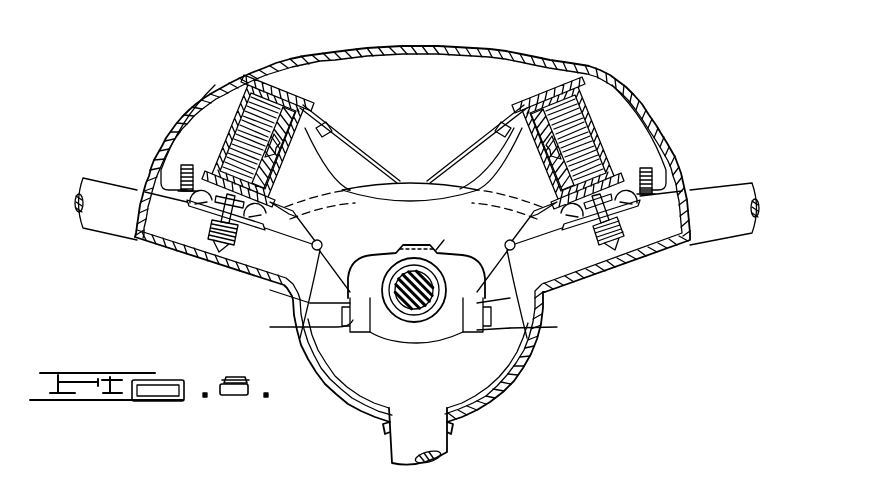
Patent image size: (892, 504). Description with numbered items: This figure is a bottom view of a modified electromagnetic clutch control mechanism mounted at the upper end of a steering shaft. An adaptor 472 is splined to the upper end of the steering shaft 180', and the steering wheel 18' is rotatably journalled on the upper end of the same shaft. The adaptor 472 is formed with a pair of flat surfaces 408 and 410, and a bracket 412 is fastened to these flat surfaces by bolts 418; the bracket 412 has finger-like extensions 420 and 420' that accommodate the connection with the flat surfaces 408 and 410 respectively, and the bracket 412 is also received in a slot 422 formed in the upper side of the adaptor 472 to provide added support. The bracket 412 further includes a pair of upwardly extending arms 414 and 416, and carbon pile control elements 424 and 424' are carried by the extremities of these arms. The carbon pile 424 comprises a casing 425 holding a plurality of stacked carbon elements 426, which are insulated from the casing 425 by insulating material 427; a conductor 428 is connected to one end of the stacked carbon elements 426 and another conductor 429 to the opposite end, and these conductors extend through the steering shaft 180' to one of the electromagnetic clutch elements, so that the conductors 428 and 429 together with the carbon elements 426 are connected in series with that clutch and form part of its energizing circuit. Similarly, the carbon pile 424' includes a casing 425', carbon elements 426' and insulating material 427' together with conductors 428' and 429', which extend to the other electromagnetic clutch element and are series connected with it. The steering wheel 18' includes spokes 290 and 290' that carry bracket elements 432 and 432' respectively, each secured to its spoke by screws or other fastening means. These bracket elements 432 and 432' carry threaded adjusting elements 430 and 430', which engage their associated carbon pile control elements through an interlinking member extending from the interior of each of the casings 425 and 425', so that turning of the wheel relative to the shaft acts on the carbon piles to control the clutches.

The steering wheel 18' is at (412, 255).
The spoke 290 is at (117, 221).
The spoke 290' is at (705, 199).
The carbon pile 424 is at (258, 118).
The carbon pile 424' is at (568, 120).
The casing 425 is at (214, 129).
The casing 425' is at (605, 122).
The stacked carbon elements 426 is at (209, 147).
The carbon elements 426' is at (609, 142).
The insulating material 427 is at (280, 150).
The insulating material 427' is at (618, 170).
The conductor 428 is at (350, 137).
The conductor 428' is at (477, 143).
The conductor 429 is at (365, 159).
The conductor 429' is at (502, 159).
The threaded adjusting element 430 is at (187, 223).
The threaded adjusting element 430' is at (628, 236).
The bracket element 432 is at (235, 227).
The bracket element 432' is at (628, 235).
The finger-like extension 420 is at (521, 277).
The finger-like extension 420' is at (286, 277).
The arm 414 is at (330, 167).
The arm 416 is at (512, 162).
The flat surface 408 is at (512, 300).
The flat surface 410 is at (372, 336).
The bracket 412 is at (428, 244).
The slot 422 is at (433, 250).
The adaptor 472 is at (445, 333).
The steering shaft 180' is at (411, 329).
The bolts 418 is at (293, 332).